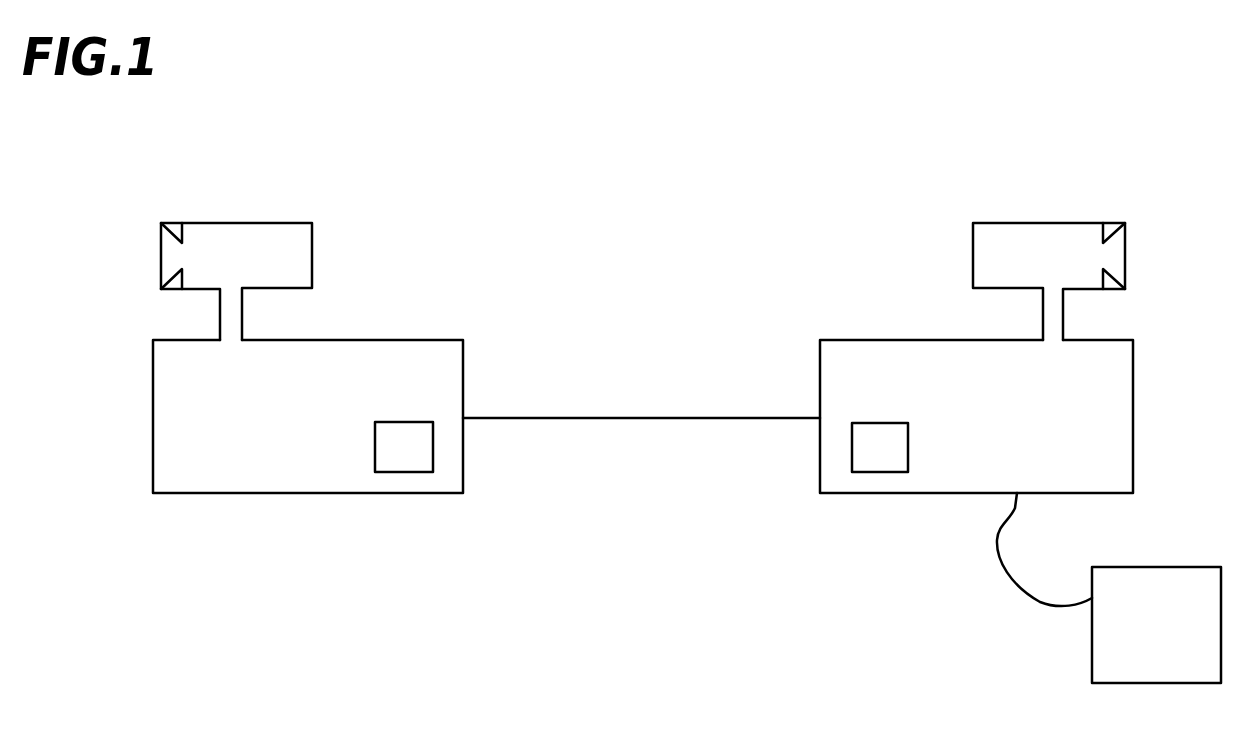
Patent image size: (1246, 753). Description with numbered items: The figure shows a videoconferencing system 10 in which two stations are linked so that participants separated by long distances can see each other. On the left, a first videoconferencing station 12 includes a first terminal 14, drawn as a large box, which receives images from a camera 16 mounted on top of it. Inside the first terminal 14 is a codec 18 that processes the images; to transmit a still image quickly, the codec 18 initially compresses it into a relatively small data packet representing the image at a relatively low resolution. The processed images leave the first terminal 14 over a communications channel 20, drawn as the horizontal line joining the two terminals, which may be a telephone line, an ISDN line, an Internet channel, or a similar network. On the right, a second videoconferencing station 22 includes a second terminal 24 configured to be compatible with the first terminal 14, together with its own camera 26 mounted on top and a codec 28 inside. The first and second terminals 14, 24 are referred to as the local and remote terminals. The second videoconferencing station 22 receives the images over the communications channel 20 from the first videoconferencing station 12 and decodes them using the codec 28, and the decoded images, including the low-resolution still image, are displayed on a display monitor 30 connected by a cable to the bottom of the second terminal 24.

The videoconferencing system 10 is at (418, 156).
The first videoconferencing station 12 is at (391, 275).
The first terminal 14 is at (425, 340).
The camera 16 is at (290, 222).
The codec 18 is at (389, 422).
The communications channel 20 is at (620, 402).
The second videoconferencing station 22 is at (895, 276).
The second terminal 24 is at (840, 340).
The camera 26 is at (1007, 222).
The codec 28 is at (877, 423).
The display monitor 30 is at (1092, 651).